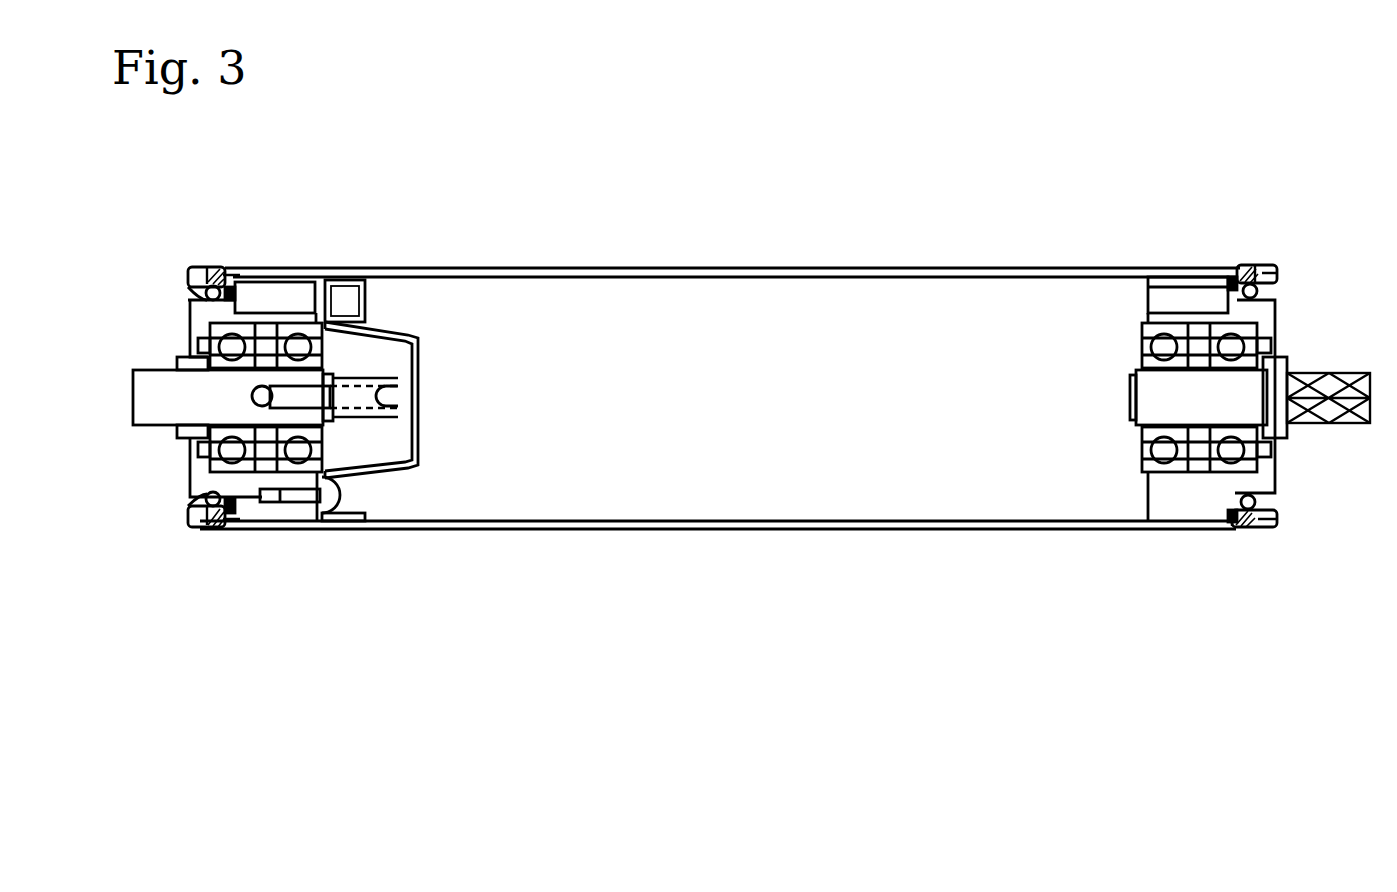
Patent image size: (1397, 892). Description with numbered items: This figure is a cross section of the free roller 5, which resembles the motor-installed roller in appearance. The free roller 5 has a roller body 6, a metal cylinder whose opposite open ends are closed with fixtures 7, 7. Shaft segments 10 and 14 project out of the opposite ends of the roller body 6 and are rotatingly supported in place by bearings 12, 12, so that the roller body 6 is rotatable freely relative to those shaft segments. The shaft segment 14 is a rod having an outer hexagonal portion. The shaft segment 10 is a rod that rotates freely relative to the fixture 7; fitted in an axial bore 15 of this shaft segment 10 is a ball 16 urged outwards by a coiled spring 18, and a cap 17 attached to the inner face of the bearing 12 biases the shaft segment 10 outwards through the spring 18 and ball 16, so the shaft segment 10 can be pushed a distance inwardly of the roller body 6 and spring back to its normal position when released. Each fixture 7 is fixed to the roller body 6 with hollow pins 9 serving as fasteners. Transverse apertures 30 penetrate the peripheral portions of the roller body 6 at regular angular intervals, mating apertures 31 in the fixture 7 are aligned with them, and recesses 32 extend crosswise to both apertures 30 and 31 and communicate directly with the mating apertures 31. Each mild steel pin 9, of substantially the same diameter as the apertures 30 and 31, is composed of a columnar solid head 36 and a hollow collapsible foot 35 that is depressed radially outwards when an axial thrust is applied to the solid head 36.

The free roller 5 is at (1308, 183).
The roller body 6 is at (1019, 267).
The fixture 7 is at (250, 512).
The hollow pin 9 is at (207, 268).
The shaft segment 10 is at (150, 410).
The bearing 12 is at (325, 505).
The shaft segment 14 is at (1352, 373).
The axial bore 15 is at (330, 380).
The ball 16 is at (258, 396).
The cap 17 is at (420, 340).
The coiled spring 18 is at (375, 412).
The transverse aperture 30 is at (222, 272).
The mating aperture 31 is at (232, 283).
The recess 32 is at (197, 293).
The hollow collapsible foot 35 is at (190, 278).
The solid head 36 is at (215, 268).